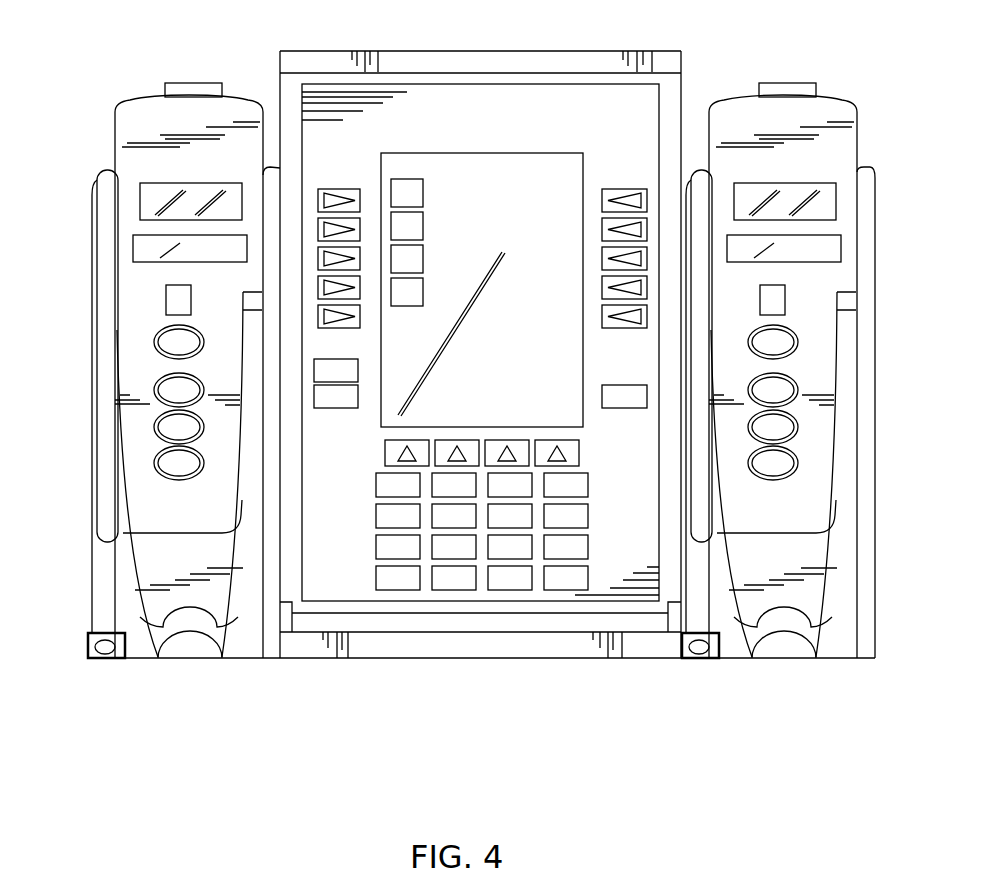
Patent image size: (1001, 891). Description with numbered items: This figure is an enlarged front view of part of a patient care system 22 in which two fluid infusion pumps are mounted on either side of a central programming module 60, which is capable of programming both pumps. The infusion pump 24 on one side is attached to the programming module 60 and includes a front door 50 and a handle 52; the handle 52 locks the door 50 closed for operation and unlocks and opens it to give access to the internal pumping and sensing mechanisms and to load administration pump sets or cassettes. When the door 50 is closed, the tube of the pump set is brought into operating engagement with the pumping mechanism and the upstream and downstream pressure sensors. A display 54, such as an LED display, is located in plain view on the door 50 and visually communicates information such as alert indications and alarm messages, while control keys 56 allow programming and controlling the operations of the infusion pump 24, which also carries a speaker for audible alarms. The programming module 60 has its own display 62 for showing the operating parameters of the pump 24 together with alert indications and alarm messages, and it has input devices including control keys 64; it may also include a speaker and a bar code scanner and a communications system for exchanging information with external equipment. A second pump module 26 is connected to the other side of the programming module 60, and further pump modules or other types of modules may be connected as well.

The handheld control unit 22 is at (811, 338).
The infusion pump 24 is at (778, 90).
The second pump module 26 is at (176, 92).
The front door 50 is at (857, 530).
The handle 52 is at (820, 598).
The display 54 is at (837, 205).
The control keys 56 is at (797, 346).
The programming module 60 is at (480, 50).
The display 62 is at (482, 153).
The control keys 64 is at (283, 262).